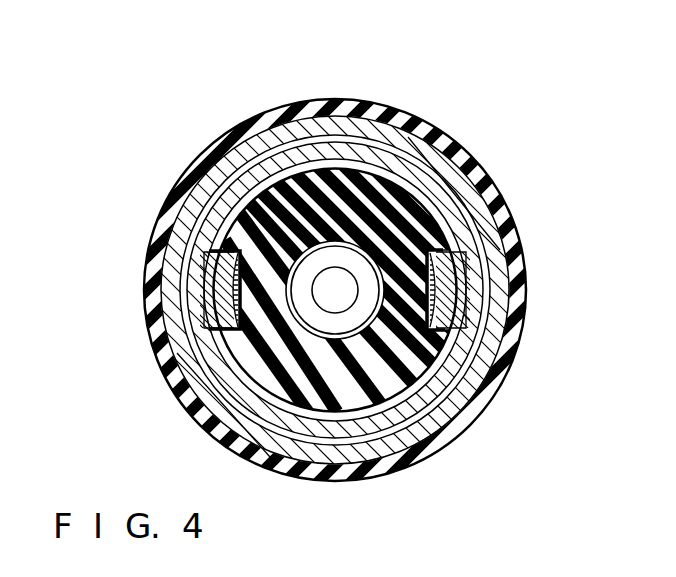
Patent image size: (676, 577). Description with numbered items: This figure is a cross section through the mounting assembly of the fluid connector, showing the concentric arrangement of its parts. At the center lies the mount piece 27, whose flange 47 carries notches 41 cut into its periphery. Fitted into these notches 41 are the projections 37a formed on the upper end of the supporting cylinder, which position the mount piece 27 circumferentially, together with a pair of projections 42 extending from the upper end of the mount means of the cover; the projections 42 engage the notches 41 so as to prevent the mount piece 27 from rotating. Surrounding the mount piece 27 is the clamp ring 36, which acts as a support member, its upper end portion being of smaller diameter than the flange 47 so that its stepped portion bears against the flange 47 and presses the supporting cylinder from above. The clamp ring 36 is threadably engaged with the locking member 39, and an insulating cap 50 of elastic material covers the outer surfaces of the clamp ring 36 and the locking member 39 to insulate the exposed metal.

The mount piece 27 is at (416, 236).
The flange 47 is at (385, 201).
The clamp ring 36 is at (233, 383).
The locking member 39 is at (427, 423).
The insulating cap 50 is at (488, 393).
The notches 41 is at (452, 258).
The projections 37a is at (448, 302).
The projections 42 is at (463, 292).